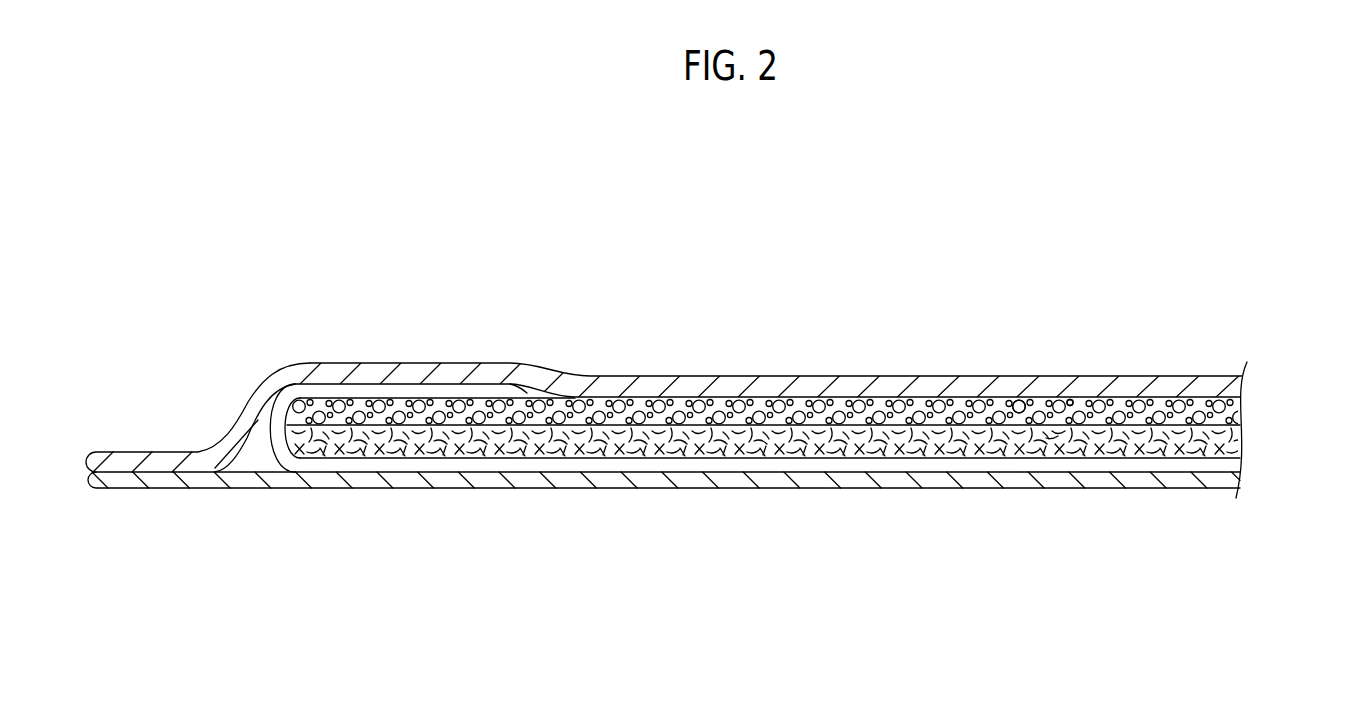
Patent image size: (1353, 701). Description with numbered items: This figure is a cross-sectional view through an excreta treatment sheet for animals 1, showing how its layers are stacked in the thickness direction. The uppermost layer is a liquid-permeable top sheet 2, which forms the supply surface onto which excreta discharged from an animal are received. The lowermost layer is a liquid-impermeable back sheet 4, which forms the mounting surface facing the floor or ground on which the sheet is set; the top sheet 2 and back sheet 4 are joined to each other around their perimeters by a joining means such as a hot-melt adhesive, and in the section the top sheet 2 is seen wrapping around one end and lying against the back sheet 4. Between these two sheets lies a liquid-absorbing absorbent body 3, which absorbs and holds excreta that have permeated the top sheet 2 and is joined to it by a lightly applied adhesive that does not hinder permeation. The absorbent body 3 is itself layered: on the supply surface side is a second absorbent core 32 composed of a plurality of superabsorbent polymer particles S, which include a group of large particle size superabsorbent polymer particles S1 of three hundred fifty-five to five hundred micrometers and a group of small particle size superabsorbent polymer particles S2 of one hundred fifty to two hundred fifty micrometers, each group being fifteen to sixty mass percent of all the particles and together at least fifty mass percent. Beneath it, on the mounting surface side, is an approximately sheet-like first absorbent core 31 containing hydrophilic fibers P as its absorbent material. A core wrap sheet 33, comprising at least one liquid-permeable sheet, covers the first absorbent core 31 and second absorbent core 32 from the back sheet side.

The excreta treatment sheet for animals 1 is at (1147, 238).
The liquid-permeable top sheet 2 is at (1204, 388).
The absorbent body 3 is at (1312, 390).
The first absorbent core 31 is at (1240, 447).
The second absorbent core 32 is at (1237, 420).
The core wrap sheet 33 is at (1237, 465).
The liquid-impermeable back sheet 4 is at (1183, 482).
The superabsorbent polymer particles S is at (1012, 319).
The large particle size superabsorbent polymer particles S1 is at (1019, 401).
The small particle size superabsorbent polymer particles S2 is at (1070, 400).
The hydrophilic fibers P is at (1052, 442).